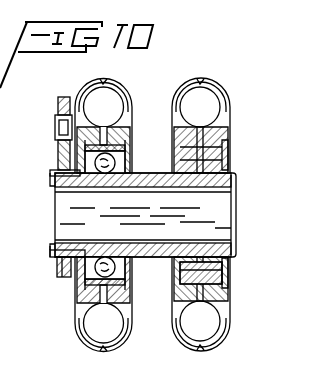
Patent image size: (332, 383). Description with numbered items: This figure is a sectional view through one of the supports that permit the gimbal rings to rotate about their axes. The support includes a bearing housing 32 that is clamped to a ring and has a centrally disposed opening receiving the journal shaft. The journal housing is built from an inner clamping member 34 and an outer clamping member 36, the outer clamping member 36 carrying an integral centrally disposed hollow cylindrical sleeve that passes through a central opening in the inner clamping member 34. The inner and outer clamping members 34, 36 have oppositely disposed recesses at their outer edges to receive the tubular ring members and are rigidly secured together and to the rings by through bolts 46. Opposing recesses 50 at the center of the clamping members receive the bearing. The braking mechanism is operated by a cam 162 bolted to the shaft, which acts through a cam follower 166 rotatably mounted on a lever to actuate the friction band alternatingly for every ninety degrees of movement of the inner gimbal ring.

The bearing housing 32 is at (133, 317).
The inner clamping member 34 is at (181, 292).
The outer clamping member 36 is at (229, 307).
The through bolts 46 is at (231, 147).
The recesses 50 is at (78, 287).
The cam 162 is at (56, 266).
The cam follower 166 is at (62, 97).